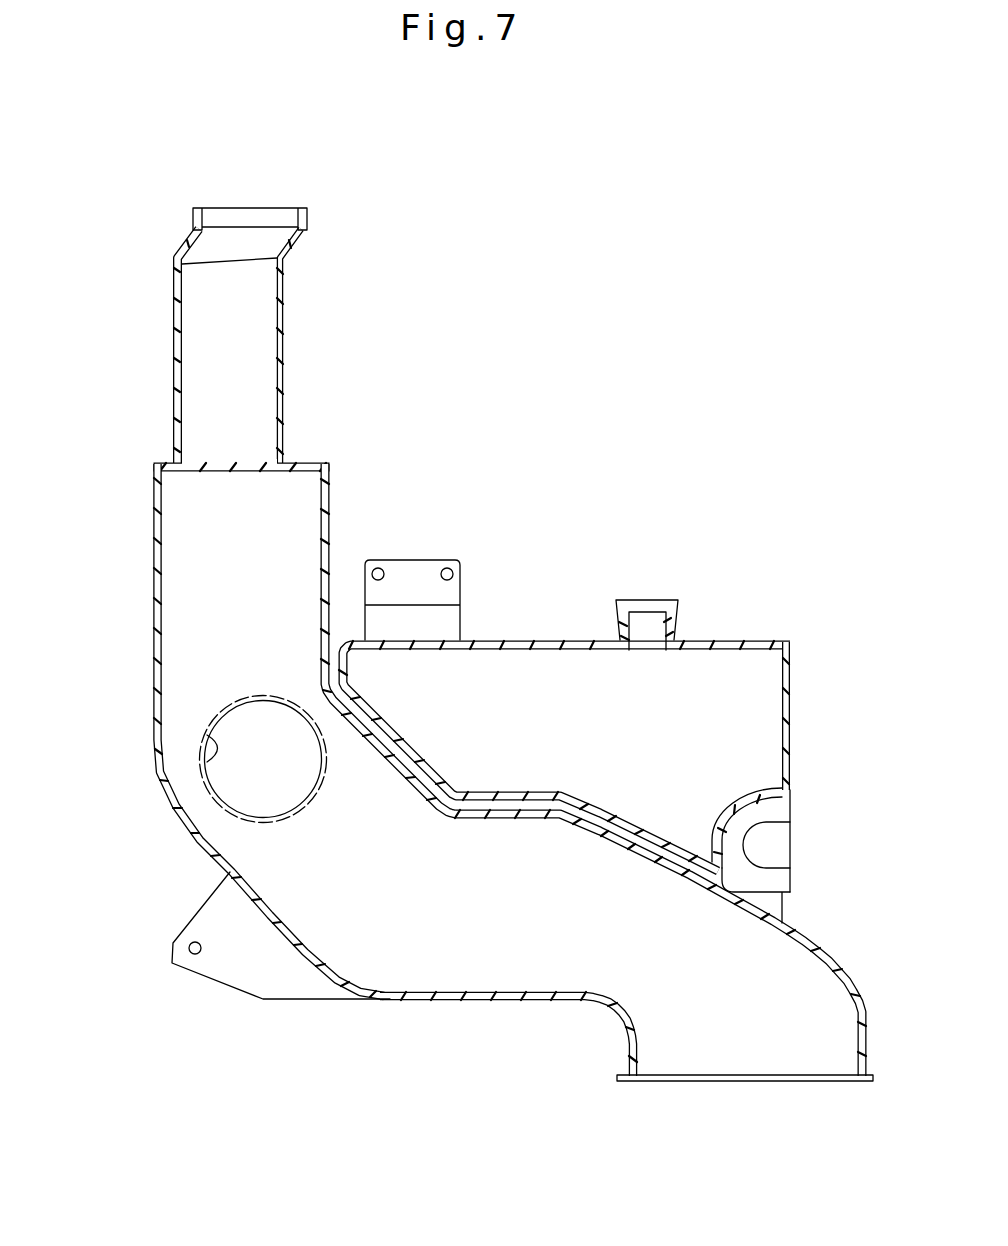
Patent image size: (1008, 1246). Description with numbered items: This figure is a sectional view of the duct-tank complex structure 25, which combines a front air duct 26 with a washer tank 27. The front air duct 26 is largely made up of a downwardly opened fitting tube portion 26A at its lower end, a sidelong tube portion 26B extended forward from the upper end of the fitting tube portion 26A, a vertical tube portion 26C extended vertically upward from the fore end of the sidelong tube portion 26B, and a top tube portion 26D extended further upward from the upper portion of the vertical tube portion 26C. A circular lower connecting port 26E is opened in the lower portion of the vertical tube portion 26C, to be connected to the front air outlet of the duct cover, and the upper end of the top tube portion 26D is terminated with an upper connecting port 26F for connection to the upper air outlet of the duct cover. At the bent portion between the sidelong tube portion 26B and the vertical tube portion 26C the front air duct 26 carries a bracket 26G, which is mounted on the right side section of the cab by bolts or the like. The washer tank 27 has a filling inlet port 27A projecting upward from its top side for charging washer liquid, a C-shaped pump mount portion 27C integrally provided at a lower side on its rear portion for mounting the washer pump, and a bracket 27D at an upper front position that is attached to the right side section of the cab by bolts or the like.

The duct-tank complex structure 25 is at (332, 491).
The front air duct 26 is at (195, 822).
The fitting tube portion 26A is at (631, 1082).
The sidelong tube portion 26B is at (483, 996).
The vertical tube portion 26C is at (154, 565).
The top tube portion 26D is at (283, 298).
The lower connecting port 26E is at (205, 757).
The upper connecting port 26F is at (250, 212).
The bracket 26G is at (218, 960).
The washer tank 27 is at (528, 640).
The filling inlet port 27A is at (650, 598).
The pump mount portion 27C is at (778, 810).
The bracket 27D is at (412, 565).